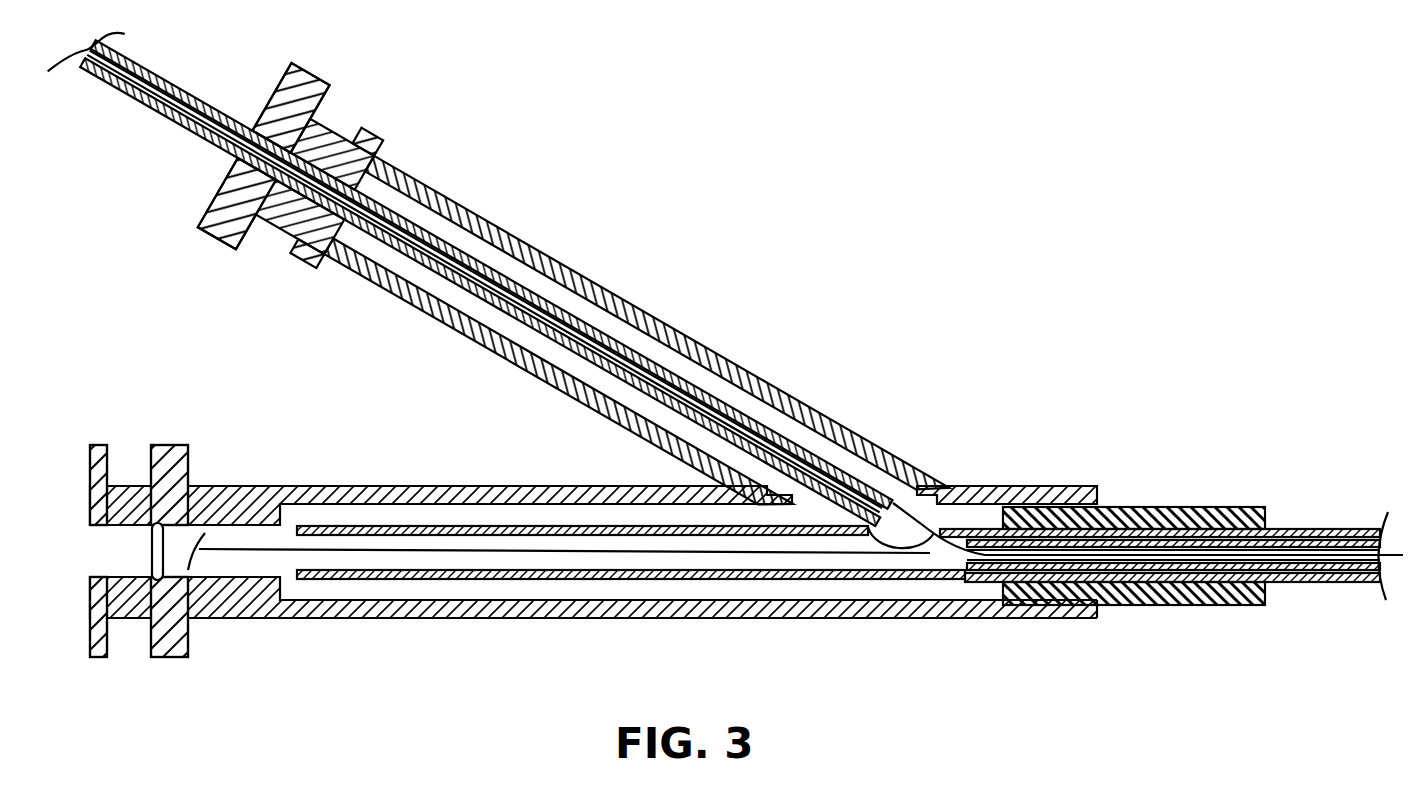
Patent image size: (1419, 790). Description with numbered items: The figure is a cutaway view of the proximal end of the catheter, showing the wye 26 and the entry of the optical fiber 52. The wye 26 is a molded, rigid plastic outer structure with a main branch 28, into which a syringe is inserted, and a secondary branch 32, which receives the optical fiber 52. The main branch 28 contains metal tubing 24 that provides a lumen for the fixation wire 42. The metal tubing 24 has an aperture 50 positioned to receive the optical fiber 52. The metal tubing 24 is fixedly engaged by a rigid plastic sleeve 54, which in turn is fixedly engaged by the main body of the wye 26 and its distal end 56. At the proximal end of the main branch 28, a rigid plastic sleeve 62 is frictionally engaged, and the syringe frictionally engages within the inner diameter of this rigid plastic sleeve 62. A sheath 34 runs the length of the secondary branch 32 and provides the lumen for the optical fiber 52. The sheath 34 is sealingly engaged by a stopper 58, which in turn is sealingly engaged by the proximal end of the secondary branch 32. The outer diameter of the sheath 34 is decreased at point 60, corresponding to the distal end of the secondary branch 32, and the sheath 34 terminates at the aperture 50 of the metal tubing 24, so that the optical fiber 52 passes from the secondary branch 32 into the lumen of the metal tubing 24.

The metal tubing 24 is at (800, 578).
The wye 26 is at (925, 192).
The main branch 28 is at (350, 486).
The secondary branch 32 is at (552, 258).
The sheath 34 is at (158, 77).
The fixation wire 42 is at (223, 552).
The aperture 50 is at (935, 533).
The optical fiber 52 is at (933, 533).
The rigid plastic sleeve 54 is at (1147, 583).
The distal end 56 is at (1028, 617).
The stopper 58 is at (316, 151).
The point 60 is at (873, 500).
The rigid plastic sleeve 62 is at (132, 590).